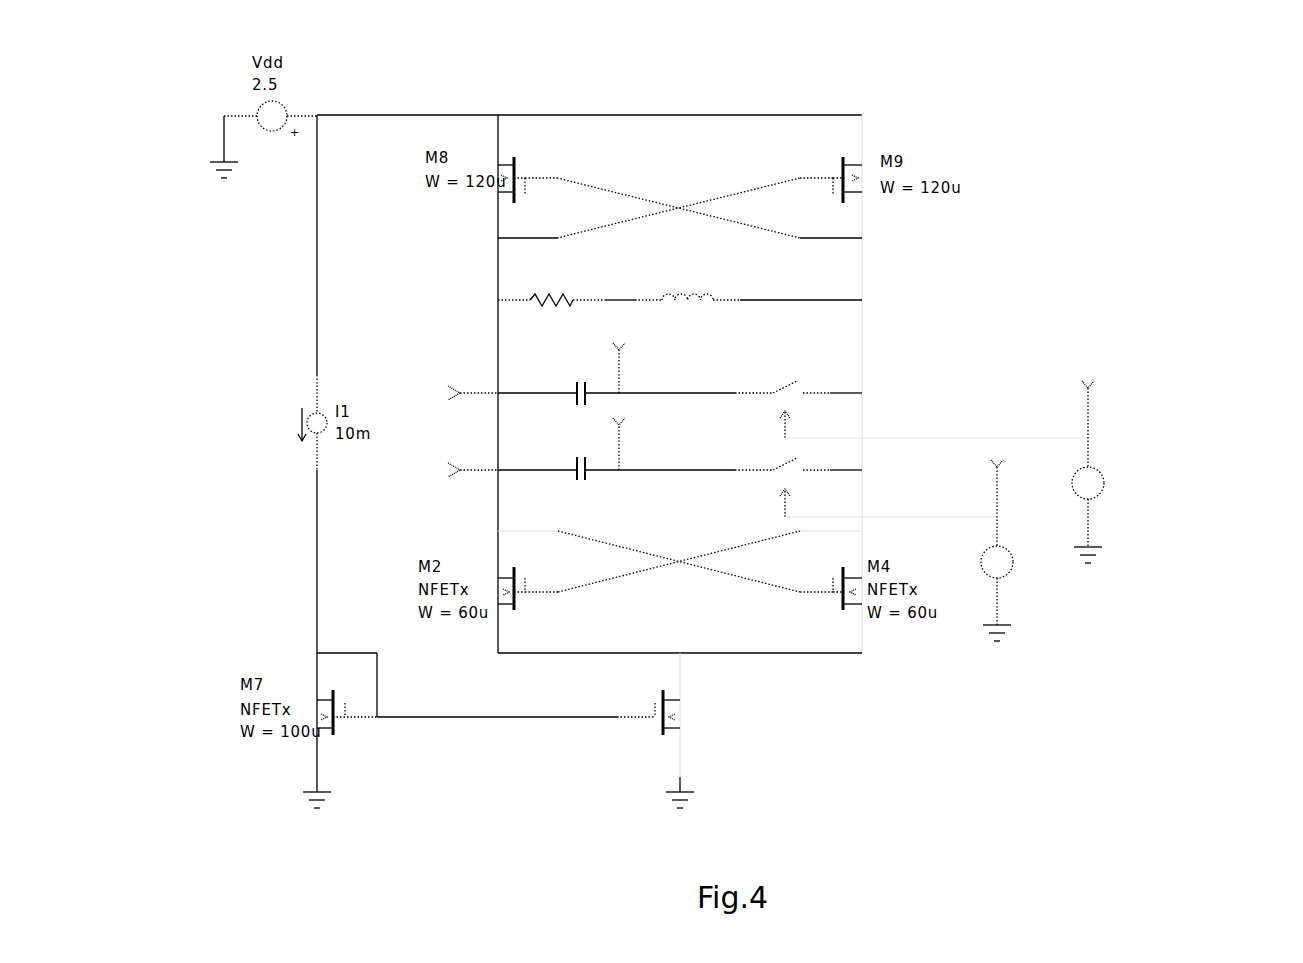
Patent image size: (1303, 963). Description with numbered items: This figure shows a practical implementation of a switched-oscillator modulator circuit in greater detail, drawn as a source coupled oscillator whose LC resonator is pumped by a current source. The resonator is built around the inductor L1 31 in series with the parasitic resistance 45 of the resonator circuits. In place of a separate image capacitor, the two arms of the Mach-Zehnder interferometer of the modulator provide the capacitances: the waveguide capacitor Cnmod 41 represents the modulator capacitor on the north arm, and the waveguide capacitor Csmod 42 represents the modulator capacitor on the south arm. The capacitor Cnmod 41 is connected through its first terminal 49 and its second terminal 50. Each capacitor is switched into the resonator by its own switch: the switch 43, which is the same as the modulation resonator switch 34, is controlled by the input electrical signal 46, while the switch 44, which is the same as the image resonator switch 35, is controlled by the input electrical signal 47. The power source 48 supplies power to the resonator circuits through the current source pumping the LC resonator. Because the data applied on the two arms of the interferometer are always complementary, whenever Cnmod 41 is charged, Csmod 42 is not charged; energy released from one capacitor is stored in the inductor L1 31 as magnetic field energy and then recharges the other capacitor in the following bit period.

The inductor L1 31 is at (722, 283).
The waveguide capacitor 1 (Cnmod) 41 is at (574, 381).
The waveguide capacitor 2 (Csmod) 42 is at (566, 487).
The switch for the resonator circuit of the modulation 43 is at (892, 378).
The switch for the resonator circuit of the modulation (X1) 34 is at (799, 379).
The switch for the image resonator circuit 44 is at (851, 443).
The switch for the image resonator circuit (X2) 35 is at (799, 457).
The parasitic resistance 45 is at (573, 284).
The input electrical signal controlling switch 43 46 is at (1119, 458).
The input electrical signal controlling switch 44 47 is at (1020, 589).
The power source 48 is at (770, 708).
The terminal 1 of the waveguide capacitor (Cnmod) 49 is at (446, 371).
The terminal 2 of the waveguide capacitor (Cnmod) 50 is at (616, 416).